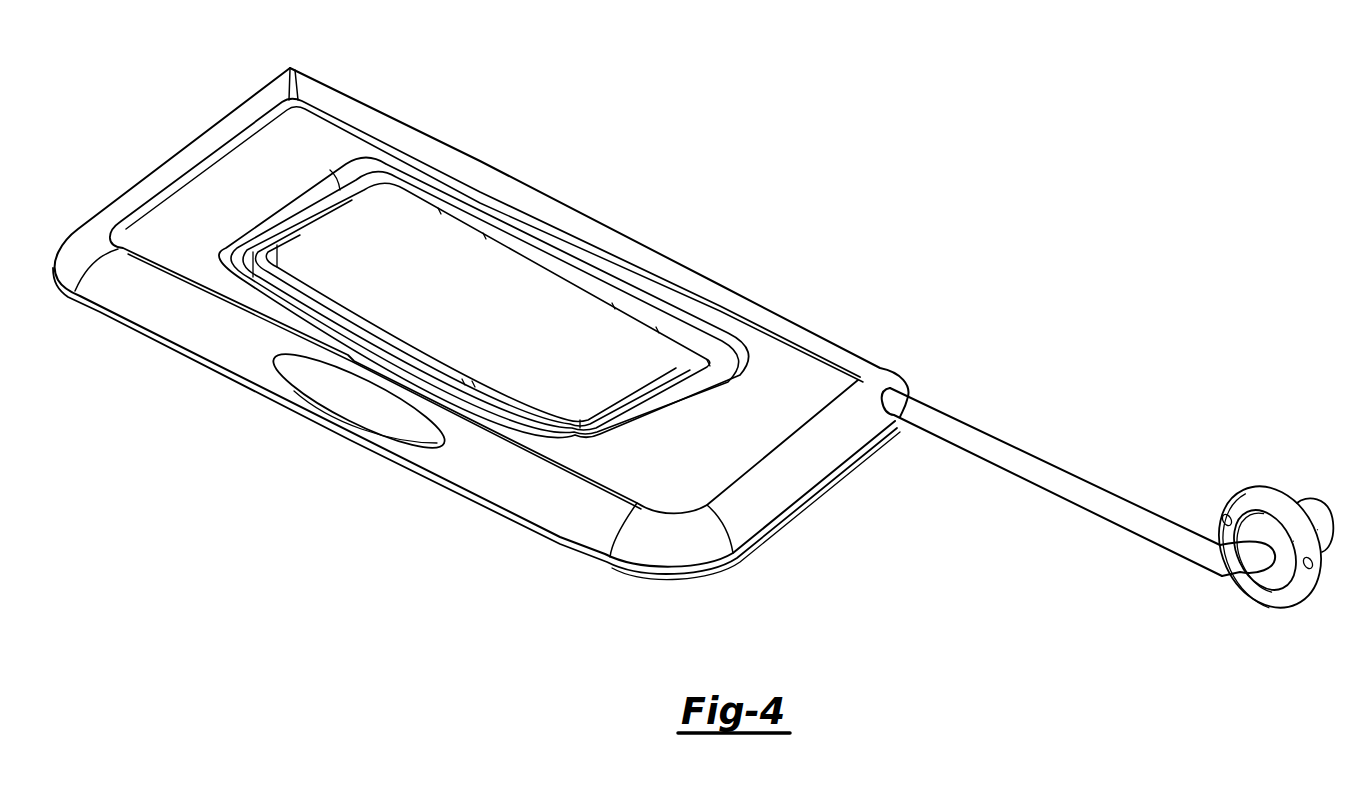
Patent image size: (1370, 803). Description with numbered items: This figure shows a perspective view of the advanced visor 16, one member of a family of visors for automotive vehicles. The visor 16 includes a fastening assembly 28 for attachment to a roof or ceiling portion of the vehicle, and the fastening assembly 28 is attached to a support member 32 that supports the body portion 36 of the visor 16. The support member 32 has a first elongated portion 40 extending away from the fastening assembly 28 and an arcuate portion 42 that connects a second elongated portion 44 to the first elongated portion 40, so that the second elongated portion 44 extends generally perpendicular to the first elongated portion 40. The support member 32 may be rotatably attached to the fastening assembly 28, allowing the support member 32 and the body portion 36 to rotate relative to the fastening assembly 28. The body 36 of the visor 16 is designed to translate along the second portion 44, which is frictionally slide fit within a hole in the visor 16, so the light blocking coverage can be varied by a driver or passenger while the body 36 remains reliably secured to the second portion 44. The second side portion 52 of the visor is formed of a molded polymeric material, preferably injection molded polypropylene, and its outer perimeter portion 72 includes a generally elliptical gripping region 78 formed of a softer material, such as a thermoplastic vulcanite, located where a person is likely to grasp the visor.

The advanced visor 16 is at (903, 329).
The fastening assembly 28 is at (1274, 575).
The support member 32 is at (1078, 515).
The body portion 36 is at (336, 444).
The first elongated portion 40 is at (1323, 512).
The arcuate portion 42 is at (1233, 568).
The second elongated portion 44 is at (1136, 503).
The second side portion 52 is at (320, 153).
The outer perimeter portion 72 is at (176, 302).
The gripping region 78 is at (312, 385).